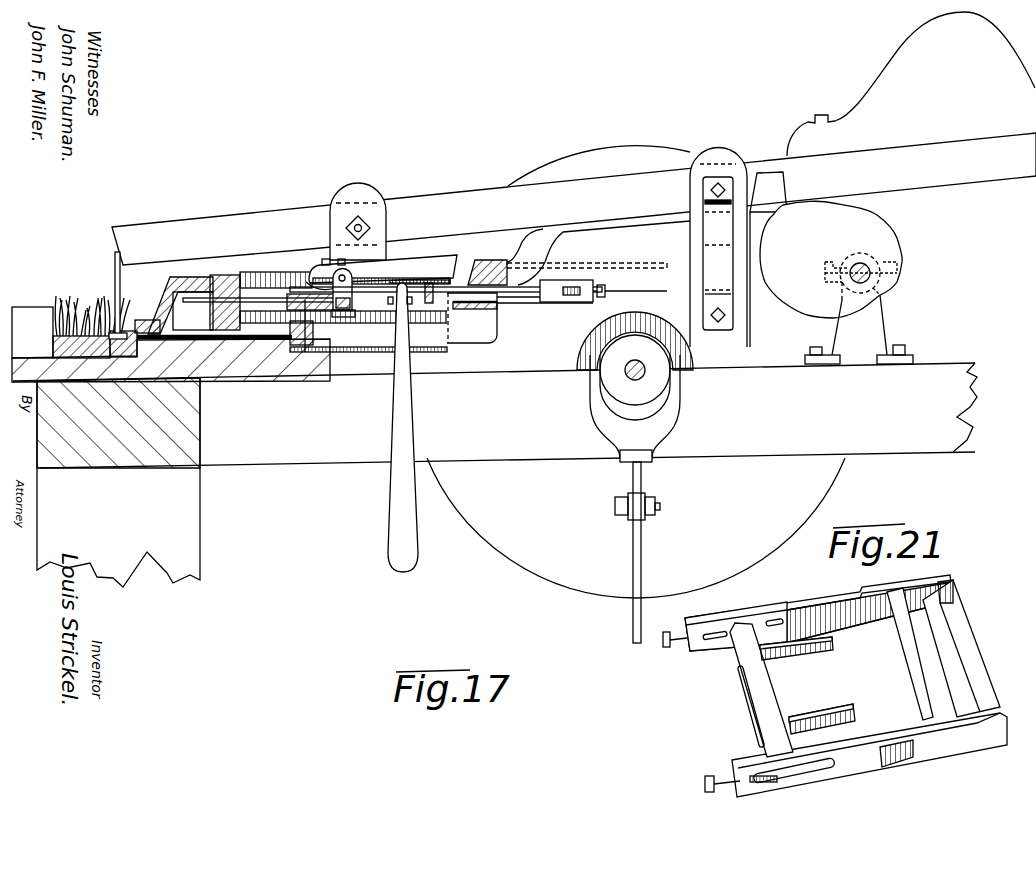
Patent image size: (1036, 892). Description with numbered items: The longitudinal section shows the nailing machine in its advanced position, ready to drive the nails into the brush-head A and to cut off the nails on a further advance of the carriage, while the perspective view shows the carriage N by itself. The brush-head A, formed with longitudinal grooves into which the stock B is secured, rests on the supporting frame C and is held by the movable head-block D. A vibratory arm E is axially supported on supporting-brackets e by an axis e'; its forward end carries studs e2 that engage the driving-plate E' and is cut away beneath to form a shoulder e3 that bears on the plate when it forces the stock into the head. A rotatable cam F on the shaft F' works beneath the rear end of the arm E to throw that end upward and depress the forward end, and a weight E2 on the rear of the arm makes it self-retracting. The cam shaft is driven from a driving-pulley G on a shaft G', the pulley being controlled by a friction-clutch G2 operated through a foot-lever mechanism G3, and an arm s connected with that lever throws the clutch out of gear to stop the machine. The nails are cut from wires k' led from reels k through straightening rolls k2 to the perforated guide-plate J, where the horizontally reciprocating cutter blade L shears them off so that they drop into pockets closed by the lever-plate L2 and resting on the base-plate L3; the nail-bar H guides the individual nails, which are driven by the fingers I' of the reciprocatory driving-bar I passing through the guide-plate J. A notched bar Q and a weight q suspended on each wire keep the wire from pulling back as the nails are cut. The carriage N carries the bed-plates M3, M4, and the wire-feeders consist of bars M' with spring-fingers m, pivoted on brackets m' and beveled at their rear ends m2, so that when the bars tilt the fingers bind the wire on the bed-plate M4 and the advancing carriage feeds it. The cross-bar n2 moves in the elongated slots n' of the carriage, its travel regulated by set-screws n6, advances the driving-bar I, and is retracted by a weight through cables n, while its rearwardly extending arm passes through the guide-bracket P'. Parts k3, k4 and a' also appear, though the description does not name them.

In FIG. 17, the vibratory arm E is at (574, 199).
In FIG. 17, the weight E2 is at (911, 84).
In FIG. 17, the driving-plate E' is at (125, 295).
In FIG. 17, the supporting-brackets e is at (354, 224).
In FIG. 17, the axis e' is at (340, 222).
In FIG. 17, the studs e2 is at (115, 266).
In FIG. 17, the shoulder e3 is at (115, 254).
In FIG. 17, the supporting frame C is at (495, 475).
In FIG. 17, the driving-pulley G is at (636, 372).
In FIG. 17, the shaft G' is at (635, 358).
In FIG. 17, the friction-clutch G2 is at (635, 408).
In FIG. 17, the foot-lever mechanism G3 is at (632, 626).
In FIG. 17, the brush-head A is at (171, 360).
In FIG. 17, the movable head-block D is at (32, 321).
In FIG. 17, the stock B is at (91, 320).
In FIG. 17, the nail-bar H is at (128, 353).
In FIG. 17, the cutter blade L is at (193, 311).
In FIG. 17, the lever-plate L2 is at (174, 305).
In FIG. 17, the base-plate L3 is at (186, 364).
In FIG. 17, the guide-plate J is at (225, 295).
In FIG. 17, the driving-bar I is at (310, 351).
In FIG. 17, the driving-fingers I' is at (214, 369).
In FIG. 17, the reels k is at (368, 312).
In FIG. 17, the wires k' is at (598, 253).
In FIG. 17, the rolls k2 is at (506, 309).
In FIG. 21, the rolls k2 is at (746, 708).
In FIG. 17, the slide body k3 is at (418, 318).
In FIG. 21, the slide body k3 is at (807, 685).
In FIG. 17, the block k4 is at (485, 262).
In FIG. 21, the block k4 is at (765, 695).
In FIG. 17, the wire-feeder bar M' is at (381, 272).
In FIG. 17, the spring-fingers m is at (298, 262).
In FIG. 17, the brackets m' is at (343, 293).
In FIG. 17, the beveled rear ends m2 is at (487, 258).
In FIG. 17, the cables n is at (478, 277).
In FIG. 17, the elongated slots n' is at (566, 303).
In FIG. 21, the elongated slots n' is at (760, 700).
In FIG. 17, the set-screws n6 is at (604, 301).
In FIG. 21, the set-screws n6 is at (720, 713).
In FIG. 17, the notched bar Q is at (387, 314).
In FIG. 17, the weight q is at (403, 431).
In FIG. 17, the pin a' is at (409, 321).
In FIG. 17, the guide-bracket P' is at (738, 250).
In FIG. 17, the arm s is at (779, 229).
In FIG. 17, the cam F is at (836, 282).
In FIG. 17, the shaft F' is at (861, 261).
In FIG. 21, the carriage N is at (795, 600).
In FIG. 21, the cross-bar n2 is at (870, 679).
In FIG. 21, the bed-plate M3 is at (912, 659).
In FIG. 21, the bed-plate M4 is at (960, 647).